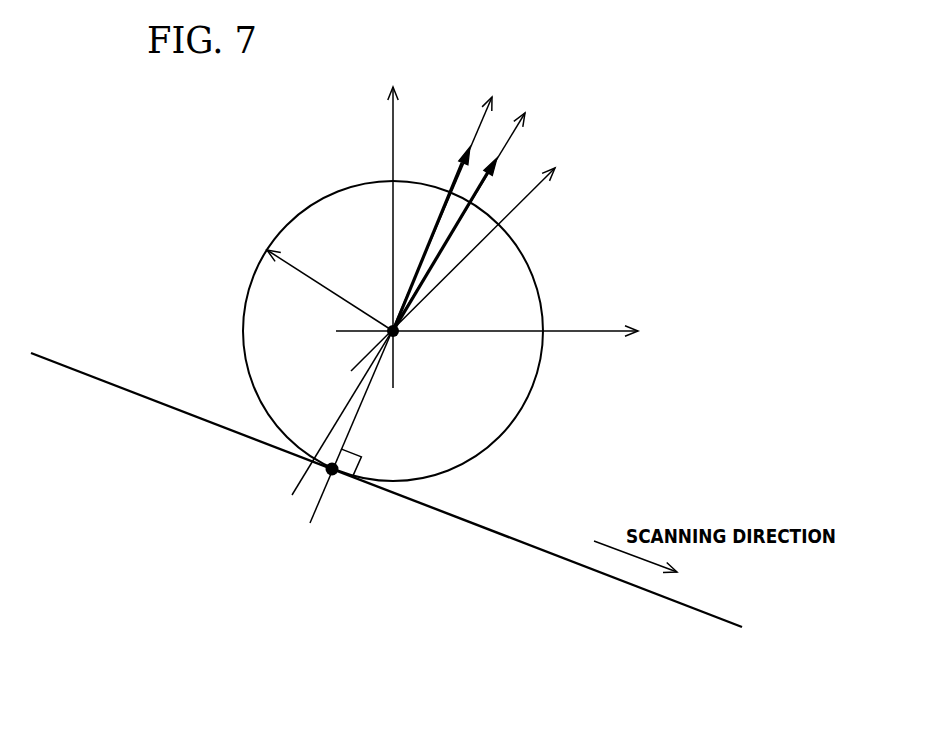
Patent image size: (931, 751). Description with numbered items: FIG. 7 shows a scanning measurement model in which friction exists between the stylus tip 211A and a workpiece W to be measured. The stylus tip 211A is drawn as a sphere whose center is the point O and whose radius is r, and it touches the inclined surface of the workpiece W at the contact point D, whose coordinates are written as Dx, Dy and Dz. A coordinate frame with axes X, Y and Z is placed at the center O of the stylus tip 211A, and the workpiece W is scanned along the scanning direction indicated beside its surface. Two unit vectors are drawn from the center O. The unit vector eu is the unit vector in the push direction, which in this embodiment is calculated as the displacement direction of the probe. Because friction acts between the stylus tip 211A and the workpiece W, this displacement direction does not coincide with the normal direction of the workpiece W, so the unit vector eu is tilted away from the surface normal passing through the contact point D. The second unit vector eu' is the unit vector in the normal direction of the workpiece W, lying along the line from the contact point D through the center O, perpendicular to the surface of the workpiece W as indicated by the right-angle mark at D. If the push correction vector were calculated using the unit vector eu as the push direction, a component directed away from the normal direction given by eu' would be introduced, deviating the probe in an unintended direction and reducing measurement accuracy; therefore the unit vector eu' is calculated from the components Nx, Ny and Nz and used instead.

The stylus tip 211A is at (530, 266).
The workpiece W is at (527, 548).
The center of the stylus tip O is at (400, 341).
The radius of the stylus tip r is at (330, 290).
The contact point D is at (328, 502).
The Z axis Z is at (393, 223).
The X axis X is at (497, 333).
The Y axis Y is at (463, 263).
The unit vector in the push direction eu is at (408, 304).
The unit vector in the normal direction of the workpiece eu' is at (401, 310).